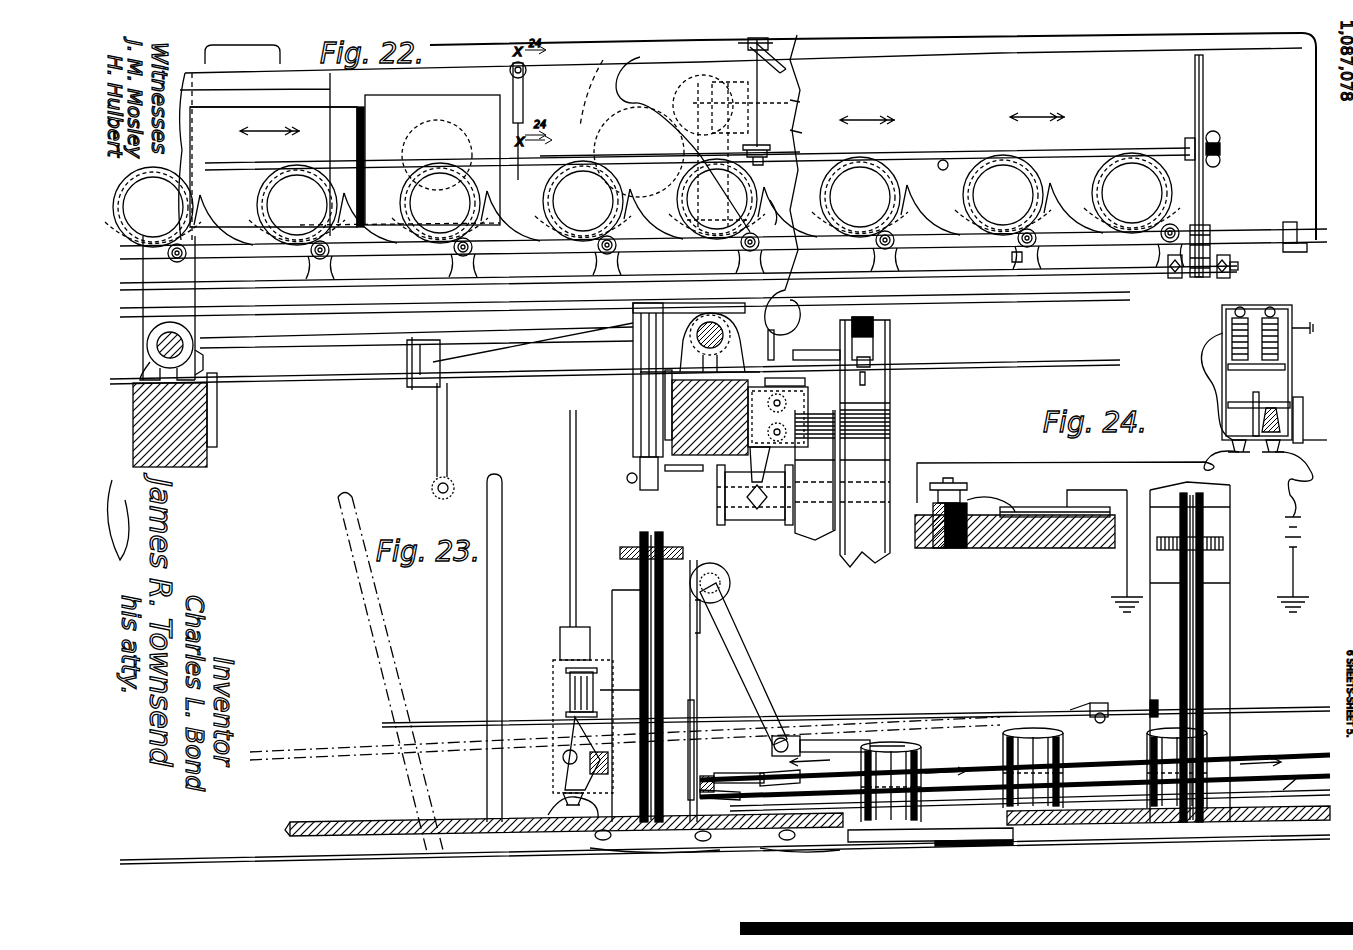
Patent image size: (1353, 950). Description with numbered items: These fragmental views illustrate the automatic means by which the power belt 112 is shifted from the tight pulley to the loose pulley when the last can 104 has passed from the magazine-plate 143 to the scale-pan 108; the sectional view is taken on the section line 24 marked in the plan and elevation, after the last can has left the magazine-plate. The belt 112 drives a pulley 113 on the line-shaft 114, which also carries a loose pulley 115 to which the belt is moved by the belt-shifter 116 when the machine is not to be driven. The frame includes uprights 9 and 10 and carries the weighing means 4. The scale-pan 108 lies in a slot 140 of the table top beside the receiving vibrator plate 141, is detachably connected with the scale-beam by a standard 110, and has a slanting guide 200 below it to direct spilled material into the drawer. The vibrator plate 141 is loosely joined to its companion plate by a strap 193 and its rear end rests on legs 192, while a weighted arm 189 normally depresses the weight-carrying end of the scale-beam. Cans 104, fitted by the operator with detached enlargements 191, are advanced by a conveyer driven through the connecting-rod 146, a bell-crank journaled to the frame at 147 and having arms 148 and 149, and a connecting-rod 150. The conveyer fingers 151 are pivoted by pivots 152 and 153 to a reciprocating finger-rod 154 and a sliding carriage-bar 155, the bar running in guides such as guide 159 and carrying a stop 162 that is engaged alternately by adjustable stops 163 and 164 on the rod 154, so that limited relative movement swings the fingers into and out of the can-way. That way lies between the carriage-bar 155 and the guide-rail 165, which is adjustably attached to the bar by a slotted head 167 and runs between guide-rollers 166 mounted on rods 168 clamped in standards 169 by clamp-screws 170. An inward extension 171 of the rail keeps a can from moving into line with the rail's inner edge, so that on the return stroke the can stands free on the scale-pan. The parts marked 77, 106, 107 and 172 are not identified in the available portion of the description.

In FIG. 22, the weighing means 4 is at (386, 104).
In FIG. 22, the upright 9 is at (633, 408).
In FIG. 23, the upright 9 is at (690, 660).
In FIG. 22, the upright 10 is at (213, 458).
In FIG. 23, the upright 10 is at (1153, 639).
In FIG. 23, the section line x24 24 is at (815, 844).
In FIG. 22, the guide rod 77 is at (564, 110).
In FIG. 22, the can 104 is at (642, 200).
In FIG. 23, the can 104 is at (891, 745).
In FIG. 22, the cam disk 106 is at (692, 144).
In FIG. 22, the cam follower 107 is at (691, 105).
In FIG. 22, the scale-pan 108 is at (432, 160).
In FIG. 23, the scale-pan 108 is at (974, 838).
In FIG. 23, the standard 110 is at (950, 828).
In FIG. 22, the power belt 112 is at (865, 570).
In FIG. 22, the pulley 113 is at (830, 542).
In FIG. 22, the line-shaft 114 is at (755, 515).
In FIG. 22, the loose pulley 115 is at (795, 522).
In FIG. 22, the belt-shifter 116 is at (883, 358).
In FIG. 23, the belt-shifter 116 is at (497, 634).
In FIG. 22, the slot 140 is at (277, 157).
In FIG. 22, the vibrator plate 141 is at (273, 131).
In FIG. 23, the magazine-plate 143 is at (525, 836).
In FIG. 23, the connecting-rod 146 is at (572, 590).
In FIG. 22, the bell-crank journal 147 is at (650, 448).
In FIG. 23, the bell-crank journal 147 is at (728, 595).
In FIG. 22, the bell-crank arm 148 is at (688, 471).
In FIG. 23, the bell-crank arm 148 is at (580, 640).
In FIG. 22, the bell-crank arm 149 is at (677, 297).
In FIG. 23, the bell-crank arm 149 is at (752, 673).
In FIG. 22, the connecting-rod 150 is at (300, 311).
In FIG. 23, the connecting-rod 150 is at (1075, 758).
In FIG. 22, the conveyer fingers 151 is at (300, 218).
In FIG. 23, the conveyer fingers 151 is at (1288, 790).
In FIG. 22, the pivot 152 is at (1020, 262).
In FIG. 22, the pivot 153 is at (1022, 247).
In FIG. 23, the pivot 153 is at (805, 738).
In FIG. 22, the reciprocating finger-rod 154 is at (1100, 301).
In FIG. 23, the reciprocating finger-rod 154 is at (703, 775).
In FIG. 22, the sliding carriage-bar 155 is at (920, 250).
In FIG. 23, the sliding carriage-bar 155 is at (746, 776).
In FIG. 22, the guide 159 is at (1290, 222).
In FIG. 22, the stop 162 is at (1200, 279).
In FIG. 22, the adjustable stop 163 is at (1235, 273).
In FIG. 22, the adjustable stop 164 is at (1165, 270).
In FIG. 22, the guide-rail 165 is at (402, 165).
In FIG. 23, the guide-rail 165 is at (960, 778).
In FIG. 22, the guide-rollers 166 is at (780, 210).
In FIG. 22, the slotted head 167 is at (1196, 86).
In FIG. 22, the rods 168 is at (792, 100).
In FIG. 22, the standards 169 is at (795, 48).
In FIG. 22, the clamp-screws 170 is at (790, 68).
In FIG. 22, the inward extension 171 is at (943, 160).
In FIG. 22, the wing nut 172 is at (1218, 133).
In FIG. 22, the weighted arm 189 is at (792, 132).
In FIG. 23, the detached enlargements 191 is at (1245, 826).
In FIG. 23, the legs 192 is at (1050, 838).
In FIG. 22, the strap 193 is at (1048, 82).
In FIG. 22, the slanting guide 200 is at (432, 96).
In FIG. 23, the slanting guide 200 is at (875, 829).